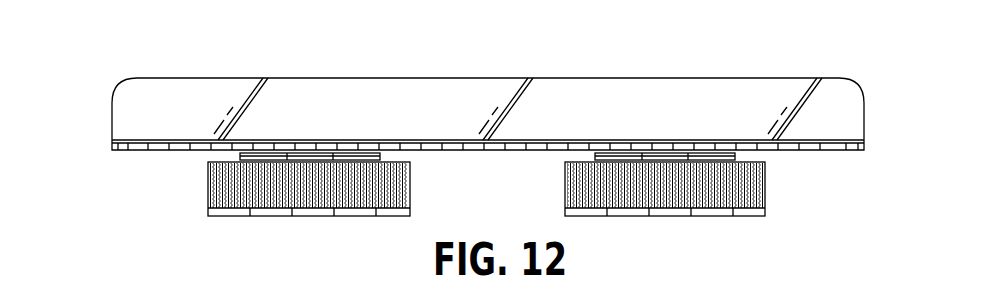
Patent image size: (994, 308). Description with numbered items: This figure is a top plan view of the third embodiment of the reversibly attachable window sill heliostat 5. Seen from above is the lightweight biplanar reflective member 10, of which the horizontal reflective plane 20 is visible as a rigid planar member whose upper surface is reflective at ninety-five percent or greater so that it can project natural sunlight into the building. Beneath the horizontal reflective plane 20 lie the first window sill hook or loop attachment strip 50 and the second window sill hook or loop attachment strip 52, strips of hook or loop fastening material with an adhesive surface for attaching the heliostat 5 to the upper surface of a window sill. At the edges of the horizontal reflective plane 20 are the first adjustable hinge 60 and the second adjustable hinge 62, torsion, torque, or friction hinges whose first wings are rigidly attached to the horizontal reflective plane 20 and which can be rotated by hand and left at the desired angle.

The reversibly attachable window sill heliostat 5 is at (100, 197).
The lightweight biplanar reflective member 10 is at (752, 307).
The horizontal reflective plane 20 is at (847, 108).
The first window sill hook or loop attachment strip 50 is at (678, 200).
The second window sill hook or loop attachment strip 52 is at (308, 200).
The first adjustable hinge 60 is at (735, 156).
The second adjustable hinge 62 is at (240, 155).